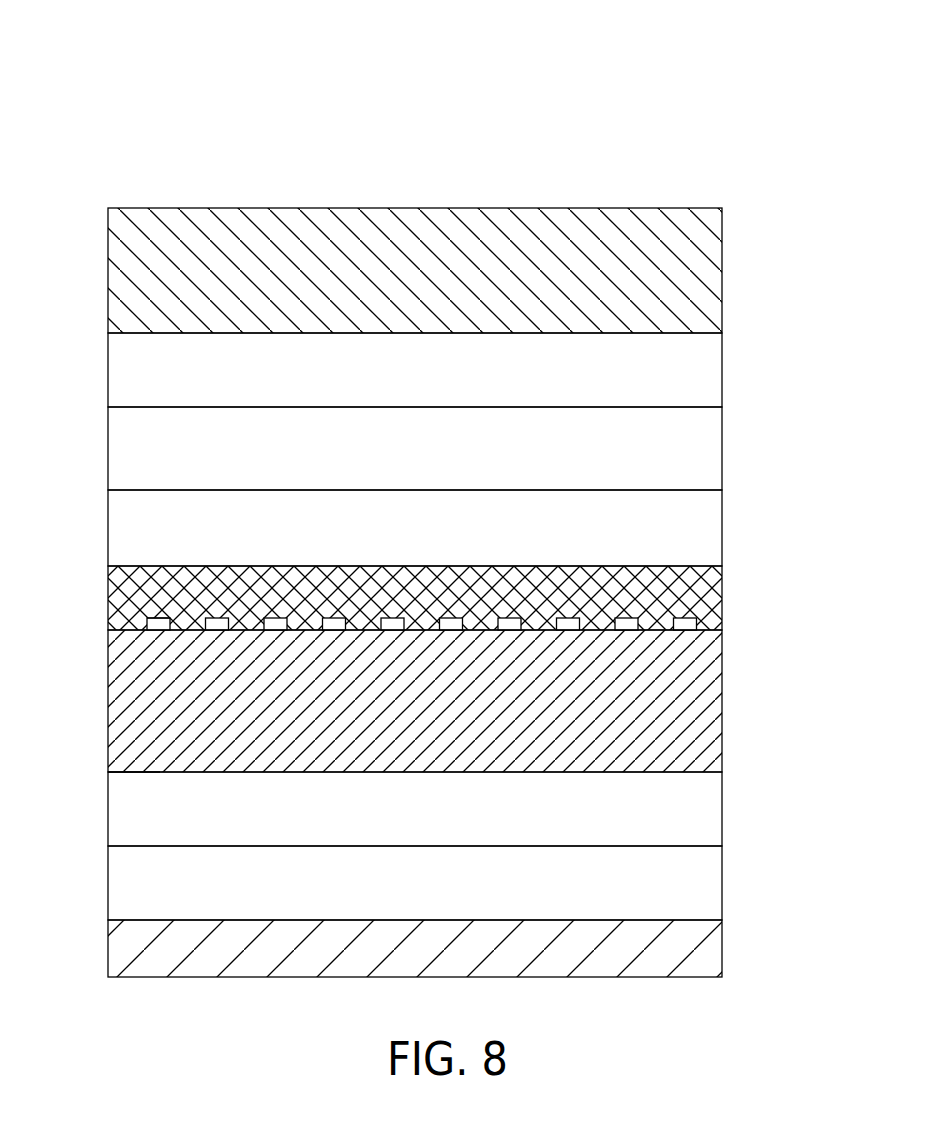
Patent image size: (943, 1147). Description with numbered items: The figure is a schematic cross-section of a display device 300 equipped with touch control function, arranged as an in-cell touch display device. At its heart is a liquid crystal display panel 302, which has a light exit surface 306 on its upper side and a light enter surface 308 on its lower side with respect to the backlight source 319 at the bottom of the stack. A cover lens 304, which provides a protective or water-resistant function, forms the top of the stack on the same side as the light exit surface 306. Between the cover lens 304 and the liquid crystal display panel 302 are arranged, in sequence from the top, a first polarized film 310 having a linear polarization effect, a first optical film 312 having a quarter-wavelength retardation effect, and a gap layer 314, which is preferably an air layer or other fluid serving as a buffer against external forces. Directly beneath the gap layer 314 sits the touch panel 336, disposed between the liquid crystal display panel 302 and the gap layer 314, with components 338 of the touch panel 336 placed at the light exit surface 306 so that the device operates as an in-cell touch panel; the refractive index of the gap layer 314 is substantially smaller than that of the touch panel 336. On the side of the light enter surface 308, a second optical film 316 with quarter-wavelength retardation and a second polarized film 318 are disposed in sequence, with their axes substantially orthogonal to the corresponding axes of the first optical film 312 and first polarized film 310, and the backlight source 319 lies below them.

The display device 300 is at (743, 82).
The liquid crystal display panel 302 is at (720, 697).
The cover lens 304 is at (717, 272).
The light exit surface 306 is at (116, 632).
The light enter surface 308 is at (130, 769).
The first polarized film 310 is at (717, 380).
The first optical film 312 is at (717, 455).
The gap layer 314 is at (707, 528).
The second optical film 316 is at (717, 807).
The second polarized film 318 is at (717, 880).
The backlight source 319 is at (717, 948).
The touch panel 336 is at (718, 607).
The components of the touch panel 338 is at (143, 620).